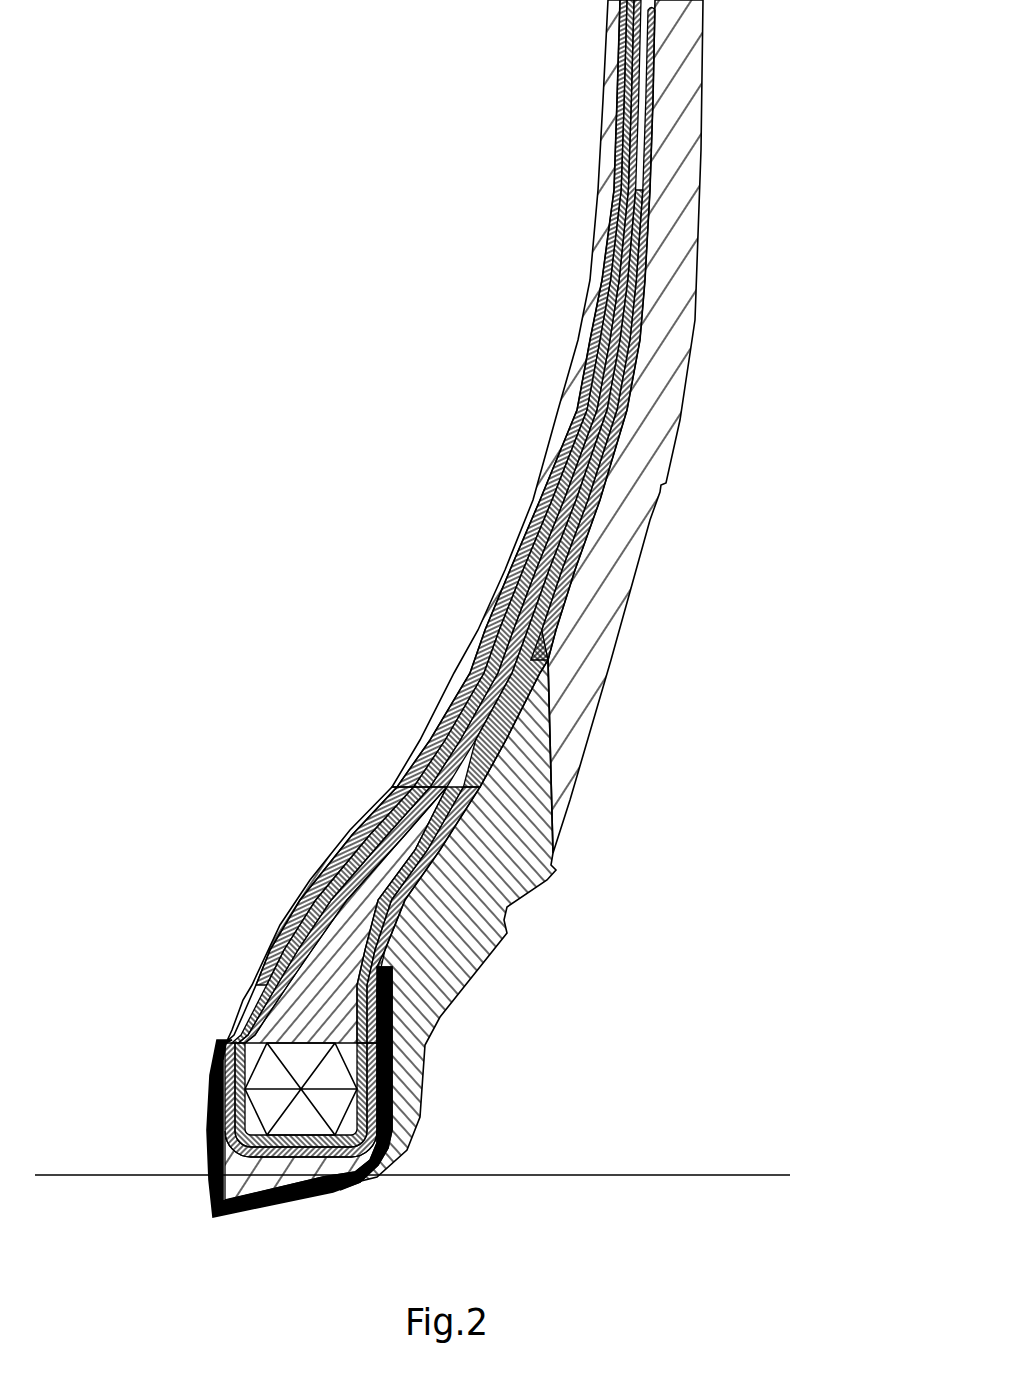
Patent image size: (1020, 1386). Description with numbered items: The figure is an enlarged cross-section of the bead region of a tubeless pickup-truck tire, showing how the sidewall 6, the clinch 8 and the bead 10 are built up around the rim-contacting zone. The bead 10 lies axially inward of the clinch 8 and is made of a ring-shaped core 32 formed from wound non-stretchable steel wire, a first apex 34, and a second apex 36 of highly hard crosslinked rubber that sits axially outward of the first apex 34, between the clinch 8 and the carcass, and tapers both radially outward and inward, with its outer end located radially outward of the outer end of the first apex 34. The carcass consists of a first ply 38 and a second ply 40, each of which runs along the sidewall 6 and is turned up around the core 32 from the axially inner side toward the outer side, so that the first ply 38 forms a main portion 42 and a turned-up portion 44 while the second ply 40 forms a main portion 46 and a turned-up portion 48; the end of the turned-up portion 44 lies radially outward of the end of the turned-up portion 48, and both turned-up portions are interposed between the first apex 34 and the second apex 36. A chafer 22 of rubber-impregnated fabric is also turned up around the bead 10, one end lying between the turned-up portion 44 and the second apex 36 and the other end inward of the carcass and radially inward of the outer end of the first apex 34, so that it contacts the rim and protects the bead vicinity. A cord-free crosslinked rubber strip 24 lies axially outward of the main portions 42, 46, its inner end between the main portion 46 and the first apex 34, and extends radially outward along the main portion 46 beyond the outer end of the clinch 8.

The sidewall 6 is at (686, 101).
The clinch 8 is at (482, 880).
The bead 10 is at (241, 961).
The chafer 22 is at (268, 1203).
The strip 24 is at (457, 673).
The core 32 is at (222, 1089).
The first apex 34 is at (290, 1000).
The second apex 36 is at (300, 912).
The first ply 38 is at (535, 578).
The second ply 40 is at (550, 492).
The main portion 42 is at (598, 300).
The turned-up portion 44 is at (643, 323).
The main portion 46 is at (578, 402).
The turned-up portion 48 is at (632, 395).